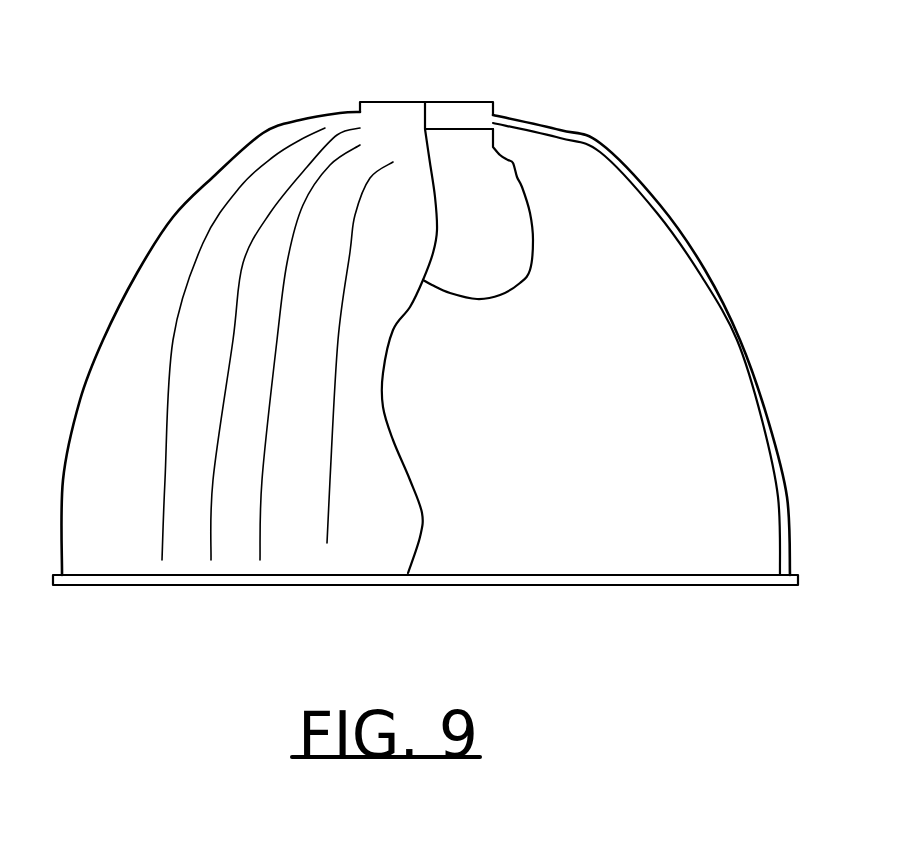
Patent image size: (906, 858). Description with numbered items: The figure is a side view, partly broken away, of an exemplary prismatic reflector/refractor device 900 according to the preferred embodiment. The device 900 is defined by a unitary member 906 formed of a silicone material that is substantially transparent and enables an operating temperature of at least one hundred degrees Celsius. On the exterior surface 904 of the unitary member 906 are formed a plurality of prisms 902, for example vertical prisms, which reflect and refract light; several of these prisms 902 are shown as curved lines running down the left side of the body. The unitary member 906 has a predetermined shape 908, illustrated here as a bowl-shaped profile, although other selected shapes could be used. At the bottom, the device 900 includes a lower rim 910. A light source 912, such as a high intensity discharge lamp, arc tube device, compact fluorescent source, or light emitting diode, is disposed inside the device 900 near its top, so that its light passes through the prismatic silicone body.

The prismatic reflector/refractor device 900 is at (415, 38).
The prisms 902 is at (202, 248).
The exterior surface 904 is at (155, 300).
The unitary member 906 is at (263, 133).
The predetermined shape 908 is at (738, 260).
The lower rim 910 is at (633, 585).
The light source 912 is at (536, 176).